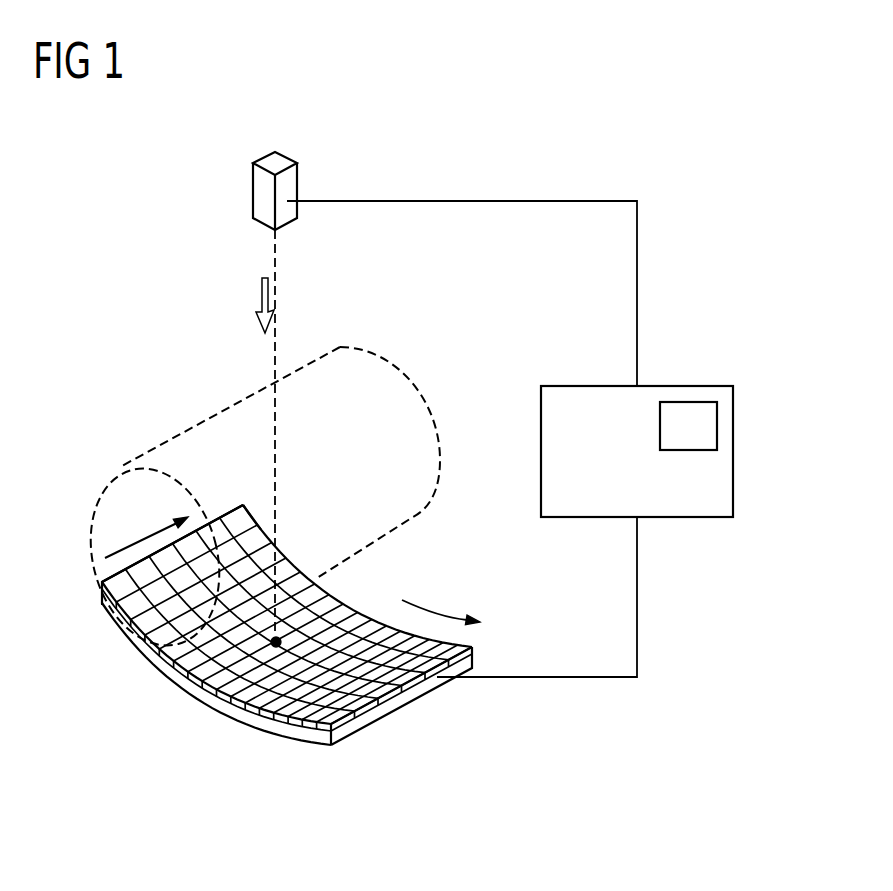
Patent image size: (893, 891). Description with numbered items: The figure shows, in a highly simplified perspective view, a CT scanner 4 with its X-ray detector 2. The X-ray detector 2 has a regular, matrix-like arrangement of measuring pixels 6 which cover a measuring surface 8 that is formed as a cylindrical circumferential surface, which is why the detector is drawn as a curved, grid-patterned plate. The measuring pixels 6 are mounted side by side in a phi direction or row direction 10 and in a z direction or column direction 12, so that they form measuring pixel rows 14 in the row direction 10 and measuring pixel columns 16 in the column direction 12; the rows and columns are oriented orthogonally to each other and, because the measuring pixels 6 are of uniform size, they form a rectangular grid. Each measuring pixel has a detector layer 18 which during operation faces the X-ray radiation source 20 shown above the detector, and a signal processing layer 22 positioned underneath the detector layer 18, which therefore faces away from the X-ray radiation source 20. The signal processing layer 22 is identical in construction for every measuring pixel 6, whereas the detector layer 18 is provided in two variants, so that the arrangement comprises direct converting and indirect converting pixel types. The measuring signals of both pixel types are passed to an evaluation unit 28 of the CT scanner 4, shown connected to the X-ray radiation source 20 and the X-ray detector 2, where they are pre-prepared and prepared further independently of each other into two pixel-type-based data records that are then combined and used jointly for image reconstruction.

The X-ray detector 2 is at (318, 607).
The CT scanner 4 is at (628, 155).
The measuring pixels 6 is at (181, 690).
The measuring surface 8 is at (358, 625).
The row direction 10 is at (438, 610).
The column direction 12 is at (110, 552).
The measuring pixel rows 14 is at (225, 494).
The measuring pixel columns 16 is at (266, 502).
The detector layer 18 is at (371, 727).
The X-ray radiation source 20 is at (285, 153).
The signal processing layer 22 is at (413, 708).
The evaluation unit 28 is at (684, 400).